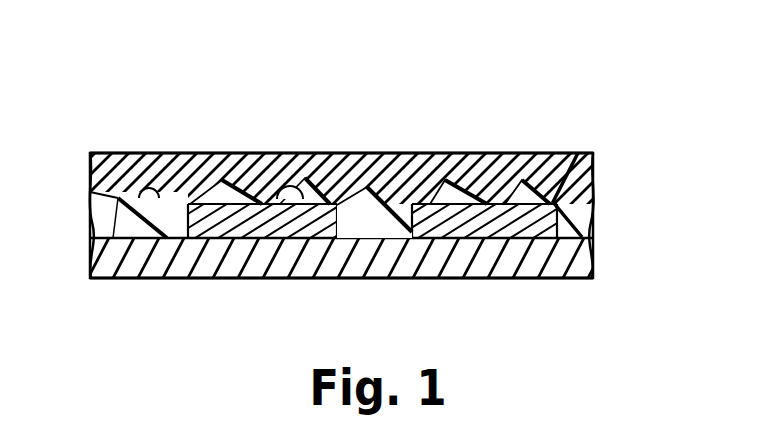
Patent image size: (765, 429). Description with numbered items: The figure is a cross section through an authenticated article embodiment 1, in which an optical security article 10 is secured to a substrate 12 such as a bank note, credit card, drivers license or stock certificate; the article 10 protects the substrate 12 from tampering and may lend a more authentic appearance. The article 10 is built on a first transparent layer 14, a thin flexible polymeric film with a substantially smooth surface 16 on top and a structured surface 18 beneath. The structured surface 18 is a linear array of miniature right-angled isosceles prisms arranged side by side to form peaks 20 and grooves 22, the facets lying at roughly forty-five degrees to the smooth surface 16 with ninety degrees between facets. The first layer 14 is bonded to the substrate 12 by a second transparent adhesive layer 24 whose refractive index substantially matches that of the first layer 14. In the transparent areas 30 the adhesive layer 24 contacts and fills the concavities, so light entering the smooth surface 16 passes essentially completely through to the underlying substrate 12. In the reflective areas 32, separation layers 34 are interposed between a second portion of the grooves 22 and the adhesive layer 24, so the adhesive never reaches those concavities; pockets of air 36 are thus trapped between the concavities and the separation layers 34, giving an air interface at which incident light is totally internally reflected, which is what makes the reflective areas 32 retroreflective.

The authenticated article embodiment 1 is at (577, 78).
The optical security article 10 is at (602, 153).
The substrate 12 is at (565, 260).
The first transparent layer 14 is at (127, 196).
The smooth surface 16 is at (225, 153).
The structured surface 18 is at (136, 190).
The peaks 20 is at (91, 248).
The grooves 22 is at (271, 180).
The second transparent adhesive layer 24 is at (133, 230).
The transparent areas 30 is at (335, 147).
The reflective areas 32 is at (410, 147).
The separation layers 34 is at (427, 233).
The pockets of air 36 is at (578, 153).